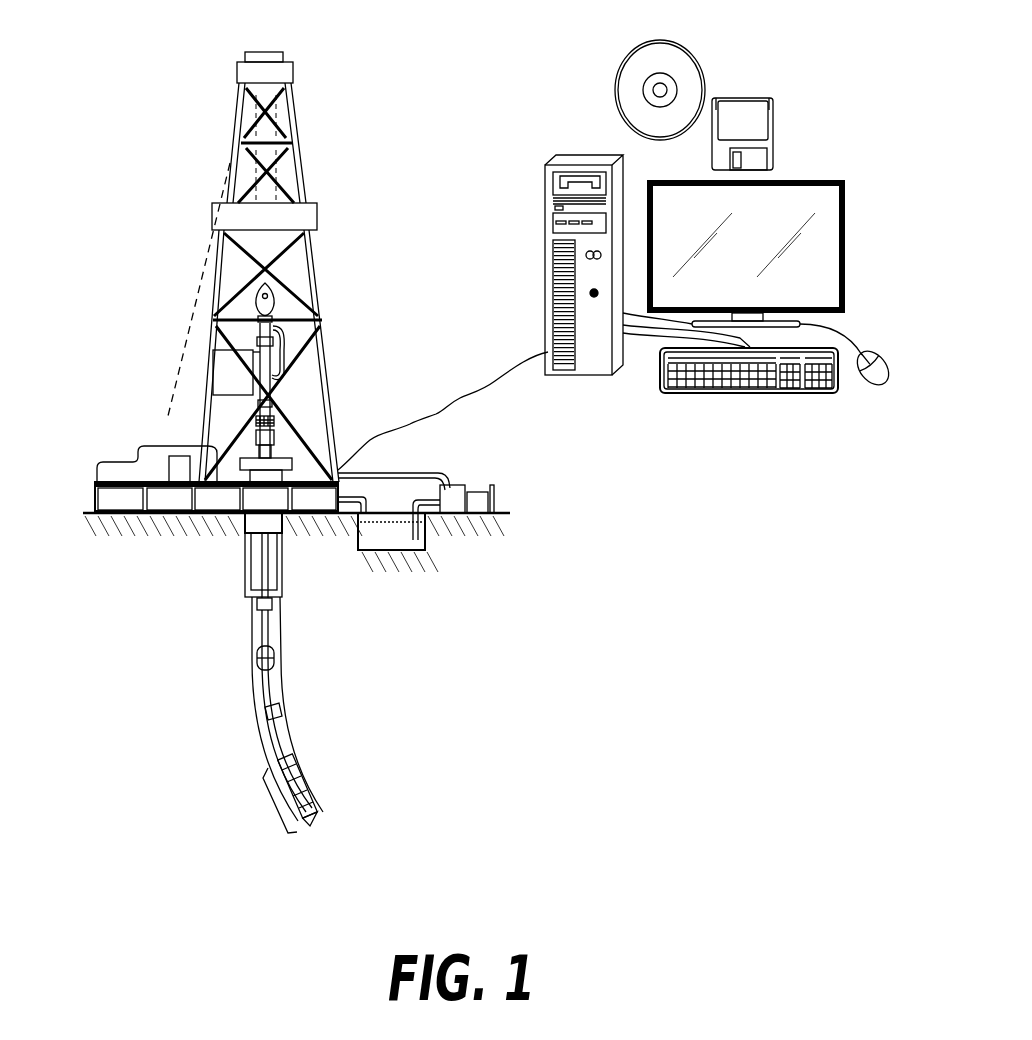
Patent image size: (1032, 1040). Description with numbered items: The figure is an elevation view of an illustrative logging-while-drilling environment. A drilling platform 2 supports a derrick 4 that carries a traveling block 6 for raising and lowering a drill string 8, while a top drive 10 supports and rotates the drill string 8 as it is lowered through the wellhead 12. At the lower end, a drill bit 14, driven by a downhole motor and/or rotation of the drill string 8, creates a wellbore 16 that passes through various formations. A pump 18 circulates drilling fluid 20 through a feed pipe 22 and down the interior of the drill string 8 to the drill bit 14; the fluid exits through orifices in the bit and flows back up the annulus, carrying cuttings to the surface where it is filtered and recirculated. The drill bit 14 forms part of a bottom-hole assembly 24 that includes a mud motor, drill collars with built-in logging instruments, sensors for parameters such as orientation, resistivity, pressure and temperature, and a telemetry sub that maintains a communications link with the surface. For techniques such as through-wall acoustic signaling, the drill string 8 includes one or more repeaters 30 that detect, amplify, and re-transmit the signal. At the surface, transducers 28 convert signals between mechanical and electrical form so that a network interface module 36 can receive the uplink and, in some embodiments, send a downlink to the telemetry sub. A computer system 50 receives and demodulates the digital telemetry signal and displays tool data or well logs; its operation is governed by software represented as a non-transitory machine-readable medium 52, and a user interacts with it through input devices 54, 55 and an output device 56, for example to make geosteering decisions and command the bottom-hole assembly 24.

The drilling platform 2 is at (95, 492).
The derrick 4 is at (303, 172).
The traveling block 6 is at (272, 298).
The drill string 8 is at (270, 637).
The top drive 10 is at (266, 357).
The wellhead 12 is at (282, 445).
The drill bit 14 is at (318, 805).
The wellbore 16 is at (283, 650).
The pump 18 is at (452, 487).
The drilling fluid 20 is at (370, 545).
The feed pipe 22 is at (400, 473).
The bottom-hole assembly 24 is at (275, 812).
The transducers 28 is at (275, 420).
The repeaters 30 is at (262, 670).
The network interface module 36 is at (182, 464).
The computer system 50 is at (622, 352).
The non-transitory machine-readable medium 52 is at (727, 70).
The input device 54 is at (770, 395).
The input device 55 is at (872, 386).
The output device 56 is at (822, 181).